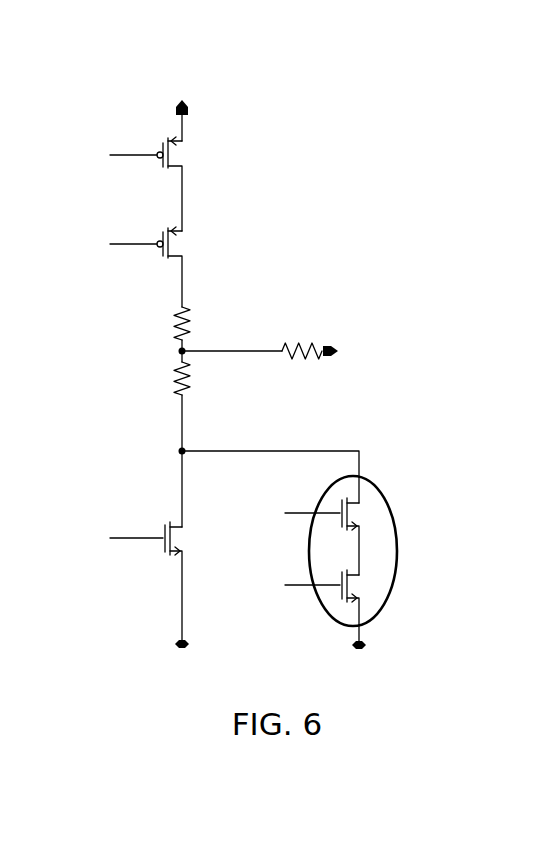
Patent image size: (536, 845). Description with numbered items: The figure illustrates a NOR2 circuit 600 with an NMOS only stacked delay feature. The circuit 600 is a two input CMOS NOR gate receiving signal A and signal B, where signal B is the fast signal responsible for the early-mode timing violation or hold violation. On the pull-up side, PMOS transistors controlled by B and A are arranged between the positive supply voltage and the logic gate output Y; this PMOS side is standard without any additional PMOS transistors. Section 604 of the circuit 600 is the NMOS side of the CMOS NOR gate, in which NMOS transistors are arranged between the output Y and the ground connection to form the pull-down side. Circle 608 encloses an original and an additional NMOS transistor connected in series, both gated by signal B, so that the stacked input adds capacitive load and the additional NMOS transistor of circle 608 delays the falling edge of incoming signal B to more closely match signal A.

The circuit 600 is at (239, 348).
The section 604 is at (98, 452).
The circle 608 is at (398, 547).